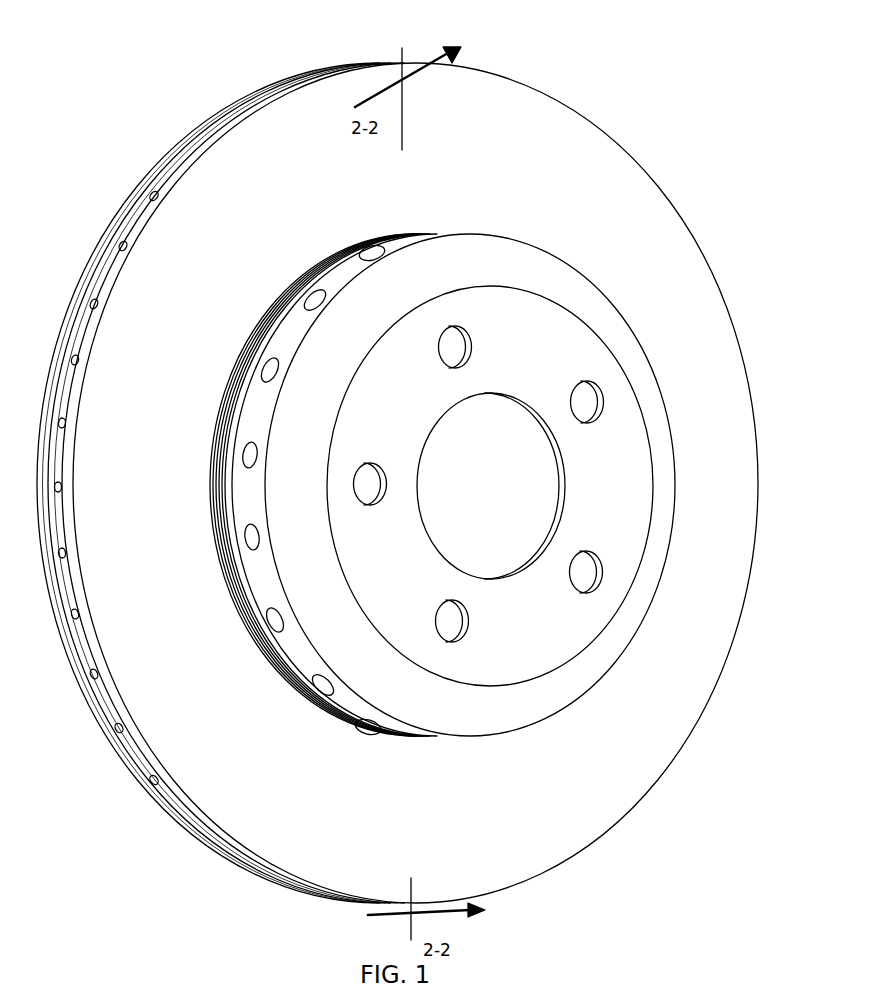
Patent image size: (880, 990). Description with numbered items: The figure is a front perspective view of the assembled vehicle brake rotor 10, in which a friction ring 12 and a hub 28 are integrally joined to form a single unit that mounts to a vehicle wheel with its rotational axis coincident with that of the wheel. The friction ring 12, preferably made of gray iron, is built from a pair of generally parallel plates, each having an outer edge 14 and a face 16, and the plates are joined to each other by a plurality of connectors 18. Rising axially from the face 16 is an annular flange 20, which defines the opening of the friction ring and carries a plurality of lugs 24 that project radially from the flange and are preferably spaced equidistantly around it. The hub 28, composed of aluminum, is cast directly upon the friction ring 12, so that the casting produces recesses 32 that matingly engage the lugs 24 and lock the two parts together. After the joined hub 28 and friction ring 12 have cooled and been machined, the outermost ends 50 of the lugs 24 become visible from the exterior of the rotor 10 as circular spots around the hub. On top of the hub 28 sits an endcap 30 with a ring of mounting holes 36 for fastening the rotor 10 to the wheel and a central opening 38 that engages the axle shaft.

The vehicle brake rotor 10 is at (178, 91).
The friction ring 12 is at (605, 127).
The edge 14 is at (70, 668).
The face 16 is at (496, 119).
The connectors 18 is at (77, 360).
The axially projecting annular flange 20 is at (246, 607).
The lugs 24 is at (269, 369).
The hub 28 is at (582, 277).
The endcap 30 is at (538, 617).
The recesses 32 is at (252, 458).
The mounting holes 36 is at (580, 402).
The central opening 38 is at (482, 460).
The outermost ends 50 is at (273, 628).